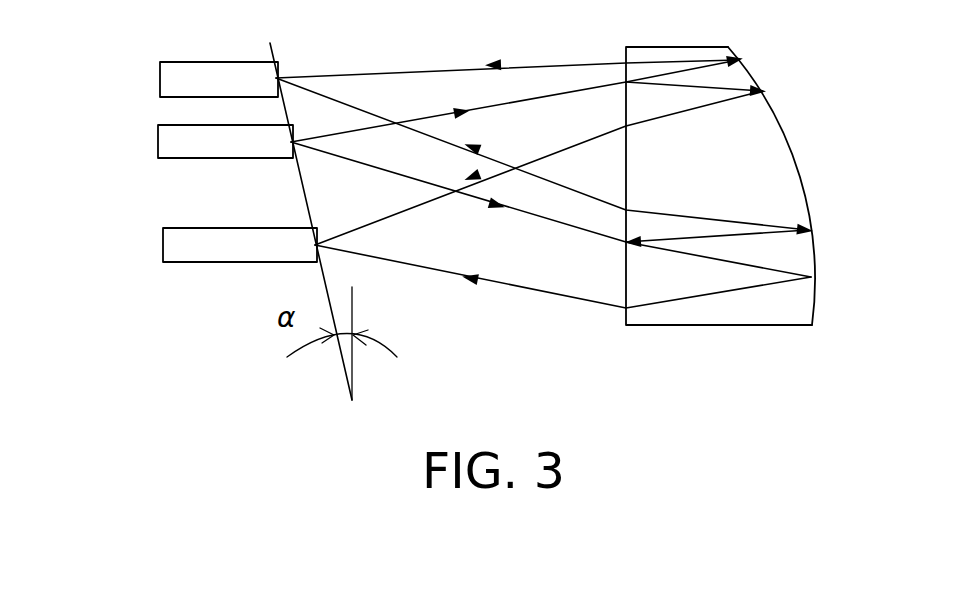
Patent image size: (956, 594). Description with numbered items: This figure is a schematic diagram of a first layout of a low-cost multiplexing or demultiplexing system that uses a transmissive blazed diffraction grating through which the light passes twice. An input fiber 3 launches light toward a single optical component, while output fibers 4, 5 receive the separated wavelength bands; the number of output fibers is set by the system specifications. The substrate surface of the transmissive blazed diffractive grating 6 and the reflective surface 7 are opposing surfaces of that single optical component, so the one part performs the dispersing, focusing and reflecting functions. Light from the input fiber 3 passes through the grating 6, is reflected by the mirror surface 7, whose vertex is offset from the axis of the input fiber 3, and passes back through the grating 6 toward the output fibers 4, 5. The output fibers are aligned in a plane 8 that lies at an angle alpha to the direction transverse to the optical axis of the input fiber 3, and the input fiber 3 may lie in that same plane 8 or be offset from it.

The input fiber 3 is at (150, 143).
The output fiber 4 is at (152, 80).
The output fiber 5 is at (160, 245).
The transmissive blazed diffractive grating substrate surface 6 is at (628, 167).
The reflective surface 7 is at (797, 162).
The plane 8 is at (272, 45).